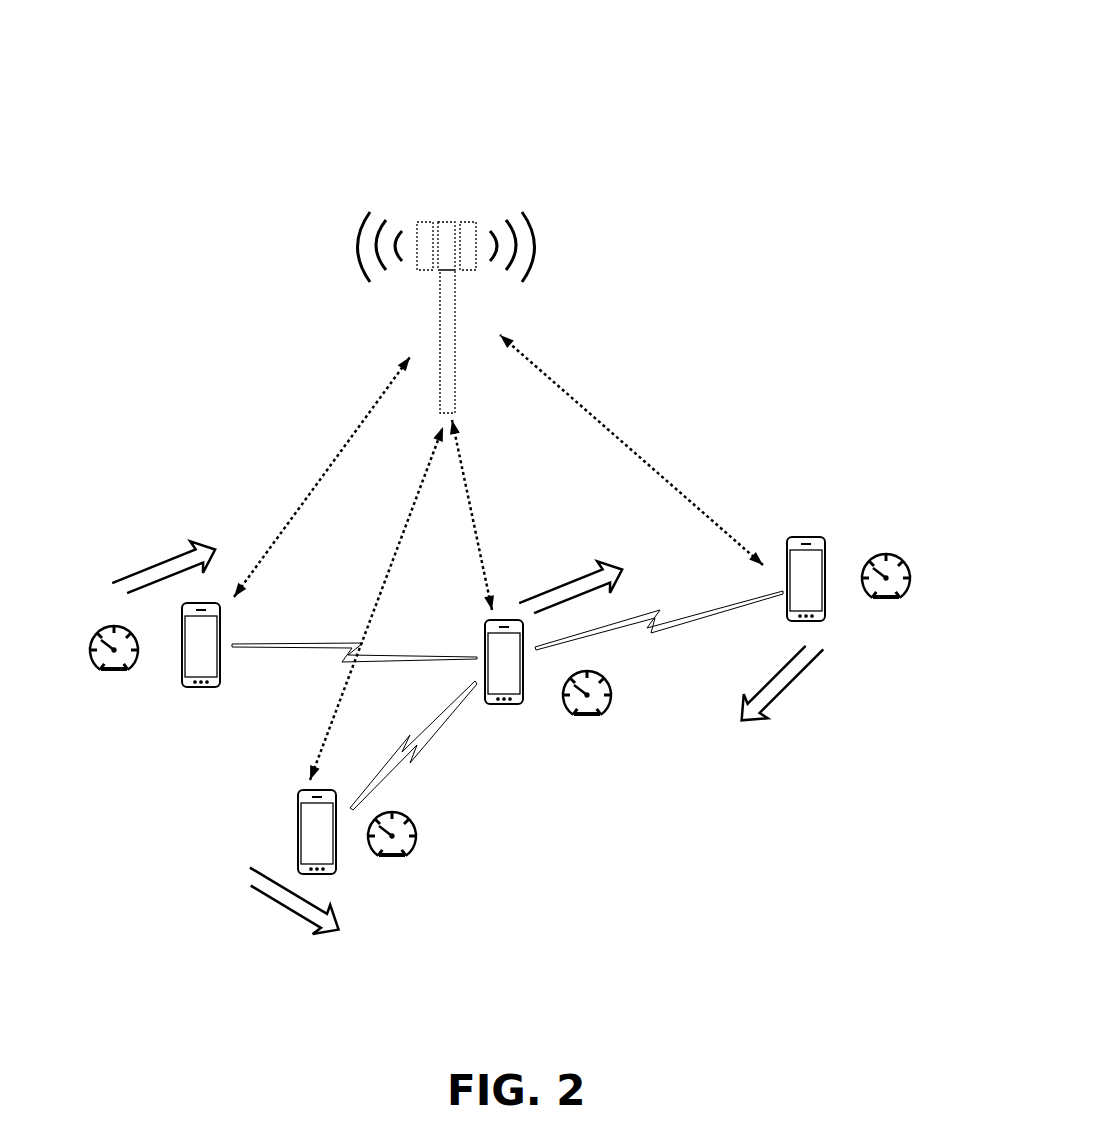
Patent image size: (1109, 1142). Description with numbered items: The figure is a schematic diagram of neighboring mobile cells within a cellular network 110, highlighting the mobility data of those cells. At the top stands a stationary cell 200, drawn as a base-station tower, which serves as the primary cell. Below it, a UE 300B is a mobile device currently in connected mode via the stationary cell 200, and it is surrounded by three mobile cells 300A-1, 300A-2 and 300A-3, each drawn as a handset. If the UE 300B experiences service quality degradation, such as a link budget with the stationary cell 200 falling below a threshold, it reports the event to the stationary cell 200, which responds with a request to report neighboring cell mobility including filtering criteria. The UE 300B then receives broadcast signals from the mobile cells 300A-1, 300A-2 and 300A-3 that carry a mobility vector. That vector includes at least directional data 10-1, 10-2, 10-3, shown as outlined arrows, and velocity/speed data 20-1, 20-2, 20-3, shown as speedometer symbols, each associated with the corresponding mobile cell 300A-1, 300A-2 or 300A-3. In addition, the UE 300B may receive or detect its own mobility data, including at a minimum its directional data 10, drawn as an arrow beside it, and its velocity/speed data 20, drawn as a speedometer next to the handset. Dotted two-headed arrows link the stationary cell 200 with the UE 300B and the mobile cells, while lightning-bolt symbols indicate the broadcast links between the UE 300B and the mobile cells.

The cellular network 110 is at (530, 104).
The stationary cell 200 is at (450, 242).
The mobile cell 300A-1 is at (202, 645).
The mobile cell 300A-2 is at (317, 832).
The mobile cell 300A-3 is at (805, 577).
The UE 300B is at (507, 686).
The velocity/speed data 20 is at (605, 688).
The velocity/speed data 20-1 is at (97, 647).
The velocity/speed data 20-2 is at (400, 832).
The velocity/speed data 20-3 is at (887, 577).
The directional data 10 is at (569, 585).
The directional data 10-1 is at (150, 580).
The directional data 10-2 is at (288, 897).
The directional data 10-3 is at (797, 675).